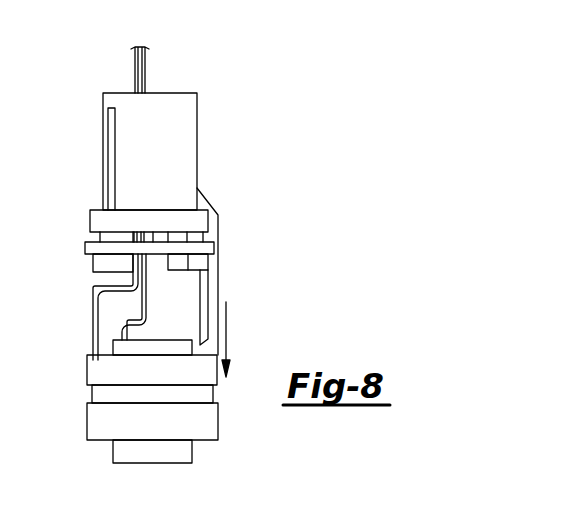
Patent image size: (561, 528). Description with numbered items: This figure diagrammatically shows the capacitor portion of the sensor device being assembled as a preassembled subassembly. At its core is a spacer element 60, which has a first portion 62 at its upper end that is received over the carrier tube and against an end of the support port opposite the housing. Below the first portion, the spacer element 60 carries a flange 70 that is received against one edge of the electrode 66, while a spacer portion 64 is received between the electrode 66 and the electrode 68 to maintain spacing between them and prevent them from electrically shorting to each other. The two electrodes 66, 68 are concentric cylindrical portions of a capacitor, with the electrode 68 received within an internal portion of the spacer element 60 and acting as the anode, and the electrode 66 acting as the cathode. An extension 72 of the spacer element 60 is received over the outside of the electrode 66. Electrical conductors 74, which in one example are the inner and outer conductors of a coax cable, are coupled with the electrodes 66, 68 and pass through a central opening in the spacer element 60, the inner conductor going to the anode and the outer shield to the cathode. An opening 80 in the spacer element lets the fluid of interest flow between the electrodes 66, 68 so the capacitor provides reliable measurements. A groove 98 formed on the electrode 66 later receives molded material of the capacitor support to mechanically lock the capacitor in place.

The spacer element 60 is at (203, 143).
The first portion 62 is at (120, 98).
The spacer portion 64 is at (92, 265).
The electrode 66 is at (90, 420).
The electrode 68 is at (188, 455).
The flange 70 is at (91, 249).
The extension 72 is at (218, 287).
The electrical conductors 74 is at (147, 60).
The opening 80 is at (152, 242).
The groove 98 is at (218, 395).